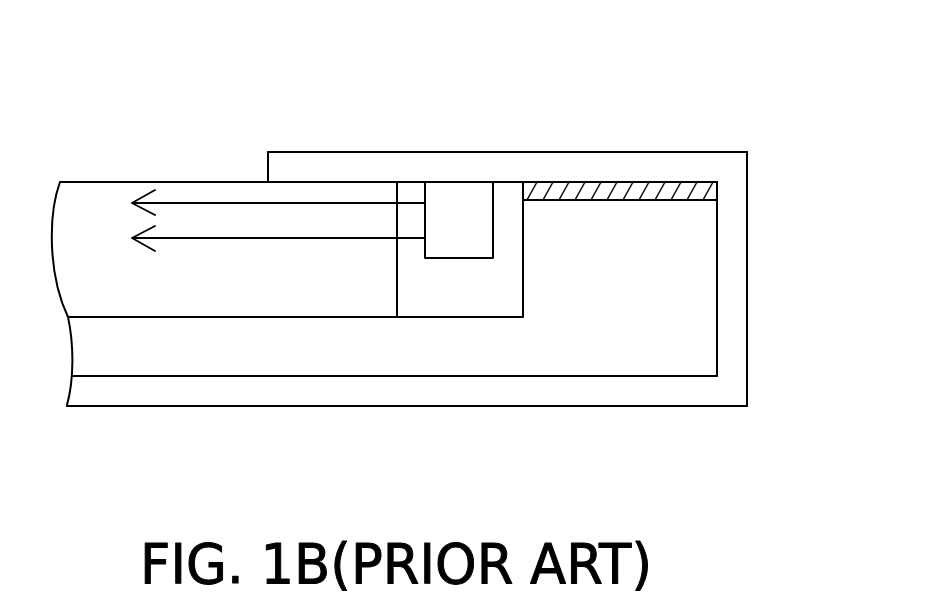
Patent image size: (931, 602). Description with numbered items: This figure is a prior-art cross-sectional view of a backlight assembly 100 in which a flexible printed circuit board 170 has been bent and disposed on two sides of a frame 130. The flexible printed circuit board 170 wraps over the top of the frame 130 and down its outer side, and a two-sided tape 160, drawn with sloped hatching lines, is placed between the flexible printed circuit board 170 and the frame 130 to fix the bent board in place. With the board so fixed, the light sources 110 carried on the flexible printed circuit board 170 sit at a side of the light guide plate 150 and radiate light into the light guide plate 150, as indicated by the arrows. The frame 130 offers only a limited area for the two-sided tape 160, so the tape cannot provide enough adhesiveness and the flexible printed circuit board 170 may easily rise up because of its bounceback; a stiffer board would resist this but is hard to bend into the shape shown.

The optical module (prior art) 100 is at (862, 32).
The light source 110 is at (445, 190).
The frame 130 is at (445, 367).
The light guide plate 150 is at (195, 305).
The two-sided tape 160 is at (645, 192).
The flexible printed circuit board 170 is at (565, 158).